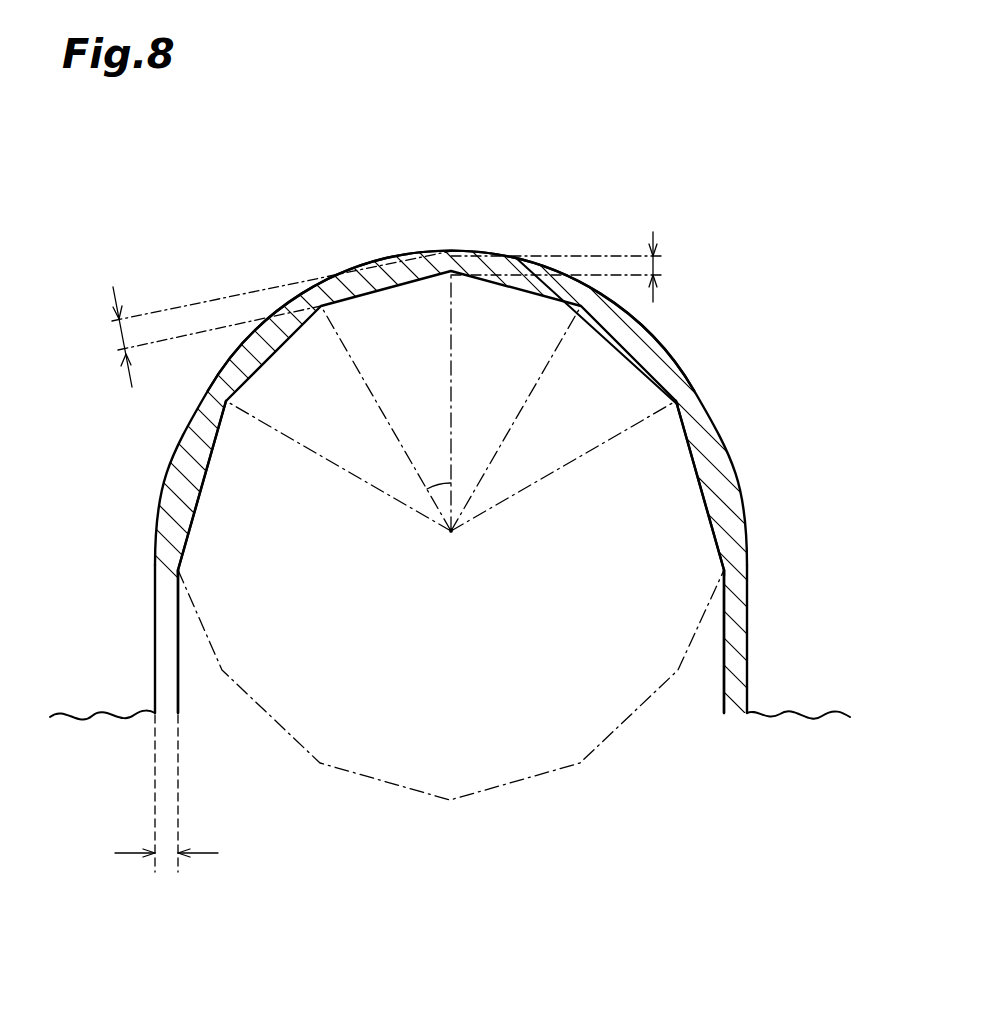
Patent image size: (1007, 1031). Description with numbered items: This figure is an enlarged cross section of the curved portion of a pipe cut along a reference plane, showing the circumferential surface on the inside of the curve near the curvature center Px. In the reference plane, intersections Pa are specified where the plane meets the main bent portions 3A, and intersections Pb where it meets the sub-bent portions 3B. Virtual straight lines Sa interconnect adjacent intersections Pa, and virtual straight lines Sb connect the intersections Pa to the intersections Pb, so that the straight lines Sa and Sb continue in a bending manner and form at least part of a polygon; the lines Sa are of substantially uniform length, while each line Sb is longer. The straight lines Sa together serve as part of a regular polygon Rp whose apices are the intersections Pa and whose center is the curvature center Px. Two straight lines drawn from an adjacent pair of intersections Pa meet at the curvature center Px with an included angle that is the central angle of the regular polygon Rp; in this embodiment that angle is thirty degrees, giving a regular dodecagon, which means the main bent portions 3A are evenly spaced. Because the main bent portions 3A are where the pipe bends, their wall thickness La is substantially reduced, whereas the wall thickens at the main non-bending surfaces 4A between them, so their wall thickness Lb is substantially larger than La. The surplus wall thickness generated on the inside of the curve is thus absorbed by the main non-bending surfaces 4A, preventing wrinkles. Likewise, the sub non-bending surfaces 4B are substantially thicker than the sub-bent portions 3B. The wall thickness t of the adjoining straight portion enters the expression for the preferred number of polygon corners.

The main bent portion 3A is at (451, 268).
The sub-bent portion 3B is at (180, 571).
The main non-bending surface 4A is at (297, 320).
The sub non-bending surface 4B is at (193, 505).
The virtual straight line Sa is at (393, 286).
The virtual straight line Sb is at (205, 476).
The curvature center Px is at (452, 532).
The regular polygon Rp is at (425, 795).
The wall thickness La is at (574, 267).
The wall thickness Lb is at (268, 319).
The wall thickness t is at (166, 804).